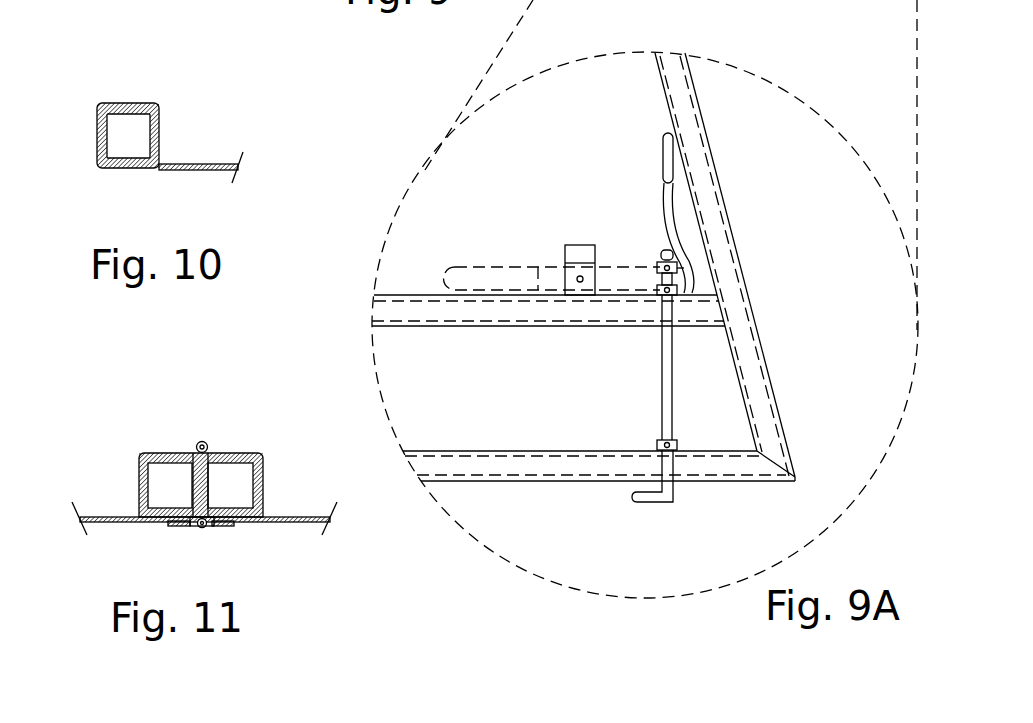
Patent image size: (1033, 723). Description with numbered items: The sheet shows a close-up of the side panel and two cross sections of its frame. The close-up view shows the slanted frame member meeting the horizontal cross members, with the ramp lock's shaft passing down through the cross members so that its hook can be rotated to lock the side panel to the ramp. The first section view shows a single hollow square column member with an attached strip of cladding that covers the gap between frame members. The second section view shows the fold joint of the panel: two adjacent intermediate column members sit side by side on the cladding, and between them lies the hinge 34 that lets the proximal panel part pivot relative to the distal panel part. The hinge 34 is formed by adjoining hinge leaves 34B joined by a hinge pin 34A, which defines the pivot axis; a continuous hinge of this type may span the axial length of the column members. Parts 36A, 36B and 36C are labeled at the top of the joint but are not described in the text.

The hinge 34 is at (201, 530).
The hinge pin 34A is at (235, 555).
The hinge leaves 34B is at (230, 538).
The upper fastener head 36A is at (197, 445).
The upper fastener pin 36B is at (208, 443).
The center web 36C is at (201, 442).